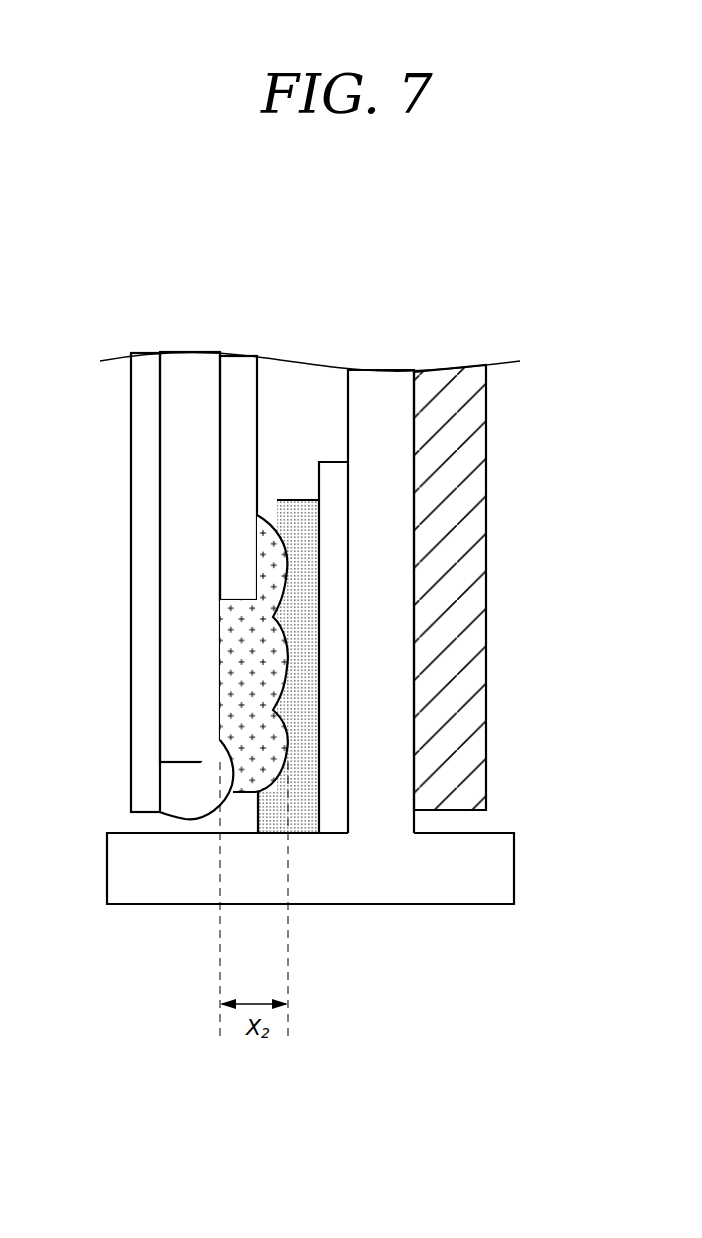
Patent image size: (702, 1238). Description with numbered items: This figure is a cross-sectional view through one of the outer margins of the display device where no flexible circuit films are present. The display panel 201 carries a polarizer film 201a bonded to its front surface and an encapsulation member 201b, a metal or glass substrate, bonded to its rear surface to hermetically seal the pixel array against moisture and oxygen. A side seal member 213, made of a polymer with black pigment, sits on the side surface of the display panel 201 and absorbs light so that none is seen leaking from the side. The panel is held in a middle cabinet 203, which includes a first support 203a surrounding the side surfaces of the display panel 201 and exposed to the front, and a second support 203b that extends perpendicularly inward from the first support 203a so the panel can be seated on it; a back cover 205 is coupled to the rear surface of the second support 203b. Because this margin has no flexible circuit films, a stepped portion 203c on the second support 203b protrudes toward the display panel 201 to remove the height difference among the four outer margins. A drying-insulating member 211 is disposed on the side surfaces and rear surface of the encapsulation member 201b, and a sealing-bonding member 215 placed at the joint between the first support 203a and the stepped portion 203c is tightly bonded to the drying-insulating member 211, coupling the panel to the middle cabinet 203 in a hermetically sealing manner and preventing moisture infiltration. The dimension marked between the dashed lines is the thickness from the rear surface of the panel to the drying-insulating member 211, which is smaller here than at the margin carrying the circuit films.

The display panel 201 is at (174, 373).
The polarizer film 201a is at (147, 365).
The encapsulation member 201b is at (238, 373).
The middle cabinet 203 is at (310, 688).
The first support 203a is at (338, 883).
The second support 203b is at (368, 793).
The stepped portion 203c is at (335, 472).
The back cover 205 is at (470, 752).
The drying-insulating member 211 is at (243, 707).
The side seal member 213 is at (183, 793).
The sealing-bonding member 215 is at (285, 500).